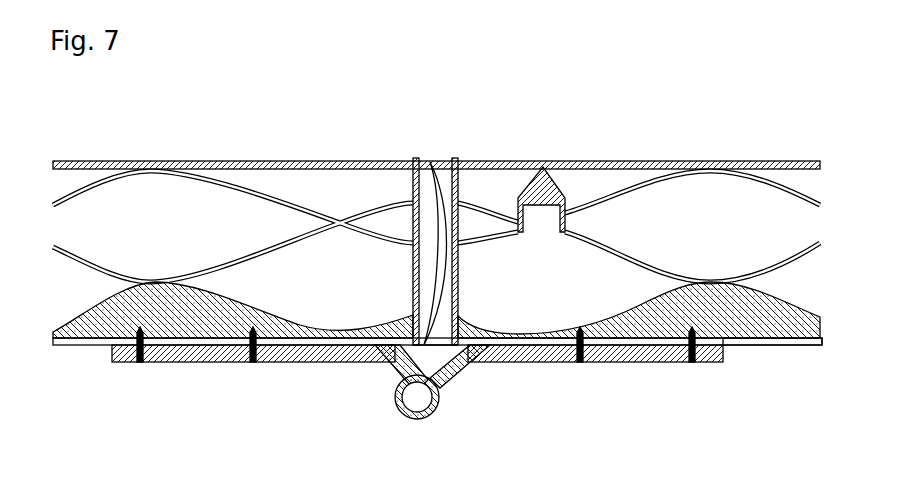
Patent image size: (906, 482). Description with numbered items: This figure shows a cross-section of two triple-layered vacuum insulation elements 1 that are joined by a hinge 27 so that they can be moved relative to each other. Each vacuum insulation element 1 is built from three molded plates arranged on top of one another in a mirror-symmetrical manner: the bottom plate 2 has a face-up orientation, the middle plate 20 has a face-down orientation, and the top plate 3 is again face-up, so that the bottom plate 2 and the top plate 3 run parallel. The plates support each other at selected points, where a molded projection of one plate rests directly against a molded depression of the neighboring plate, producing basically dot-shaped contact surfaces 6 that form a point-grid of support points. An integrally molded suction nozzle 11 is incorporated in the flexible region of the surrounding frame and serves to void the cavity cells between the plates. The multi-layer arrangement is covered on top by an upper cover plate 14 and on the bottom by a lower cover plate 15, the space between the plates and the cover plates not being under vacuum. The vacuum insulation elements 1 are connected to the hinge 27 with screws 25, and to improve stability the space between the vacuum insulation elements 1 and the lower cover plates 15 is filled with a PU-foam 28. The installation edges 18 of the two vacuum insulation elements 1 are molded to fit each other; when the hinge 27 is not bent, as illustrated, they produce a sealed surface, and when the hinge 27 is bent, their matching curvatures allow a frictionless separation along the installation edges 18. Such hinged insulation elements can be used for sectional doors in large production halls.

The vacuum insulation element 1 is at (27, 246).
The lower molded plate 2 is at (290, 362).
The upper molded plate 3 is at (226, 186).
The contact surface 6 is at (717, 283).
The suction nozzle 11 is at (550, 203).
The upper cover plate 14 is at (648, 161).
The lower cover plate 15 is at (800, 344).
The installation edge 18 is at (441, 180).
The middle molded plate 20 is at (205, 288).
The screws 25 is at (690, 361).
The hinge 27 is at (460, 368).
The PU-foam 28 is at (80, 343).